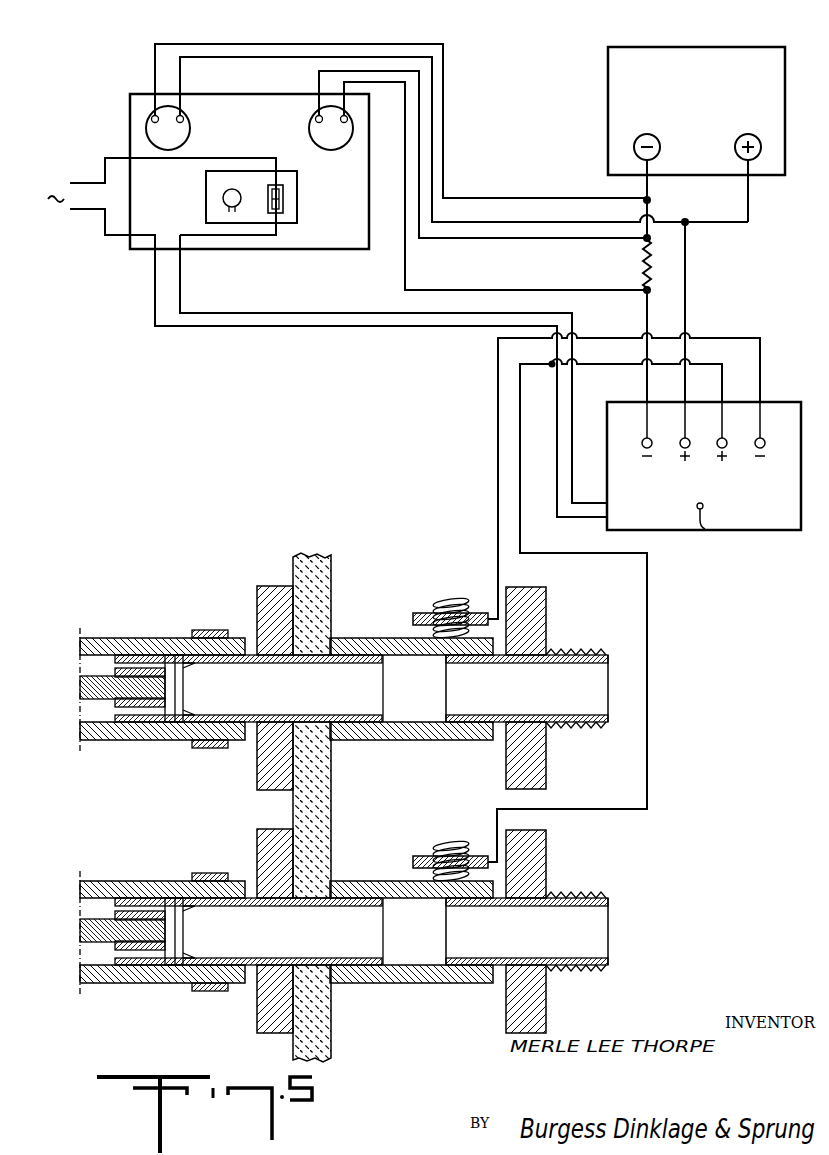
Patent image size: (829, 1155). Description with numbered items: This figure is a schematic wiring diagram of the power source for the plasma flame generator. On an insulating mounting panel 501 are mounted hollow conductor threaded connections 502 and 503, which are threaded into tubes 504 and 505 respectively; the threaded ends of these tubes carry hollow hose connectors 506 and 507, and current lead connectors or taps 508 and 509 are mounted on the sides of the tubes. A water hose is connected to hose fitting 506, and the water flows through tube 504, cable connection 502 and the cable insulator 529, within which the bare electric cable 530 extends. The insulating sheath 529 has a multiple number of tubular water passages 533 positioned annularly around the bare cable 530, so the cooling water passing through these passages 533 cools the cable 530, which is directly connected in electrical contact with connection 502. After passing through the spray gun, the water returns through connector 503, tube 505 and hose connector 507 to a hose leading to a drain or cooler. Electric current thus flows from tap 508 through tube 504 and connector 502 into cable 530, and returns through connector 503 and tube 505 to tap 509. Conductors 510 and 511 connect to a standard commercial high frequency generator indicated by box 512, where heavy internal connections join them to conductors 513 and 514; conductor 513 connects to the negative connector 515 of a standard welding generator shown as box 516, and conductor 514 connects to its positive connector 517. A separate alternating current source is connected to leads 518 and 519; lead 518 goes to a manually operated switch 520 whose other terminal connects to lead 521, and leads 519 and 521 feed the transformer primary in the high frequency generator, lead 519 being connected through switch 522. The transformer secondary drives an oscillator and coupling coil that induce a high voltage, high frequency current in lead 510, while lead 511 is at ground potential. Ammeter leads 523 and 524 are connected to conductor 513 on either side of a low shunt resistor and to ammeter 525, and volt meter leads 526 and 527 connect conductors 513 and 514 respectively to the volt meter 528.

The insulating mounting panel 501 is at (320, 582).
The hollow conductor threaded connection 502 is at (258, 606).
The hollow conductor threaded connection 503 is at (262, 1020).
The tube 504 is at (380, 640).
The tube 505 is at (350, 968).
The hollow hose connector 506 is at (535, 606).
The hollow hose connector 507 is at (535, 858).
The current lead connector or tap 508 is at (445, 600).
The current lead connector or tap 509 is at (445, 845).
The conductor 510 is at (729, 338).
The conductor 511 is at (709, 364).
The high frequency generator 512 is at (767, 402).
The conductor 513 is at (651, 200).
The conductor 514 is at (686, 286).
The negative connector 515 is at (658, 147).
The welding generator 516 is at (758, 50).
The positive connector 517 is at (762, 146).
The lead 518 is at (80, 183).
The lead 519 is at (85, 209).
The manually operated switch 520 is at (284, 198).
The lead 521 is at (223, 197).
The switch 522 is at (705, 530).
The ammeter lead 523 is at (487, 238).
The ammeter lead 524 is at (487, 290).
The ammeter 525 is at (353, 130).
The volt meter lead 526 is at (207, 44).
The volt meter lead 527 is at (283, 56).
The volt meter 528 is at (184, 120).
The cable insulator 529 is at (152, 637).
The bare electric cable 530 is at (82, 686).
The tubular water passage 533 is at (80, 658).